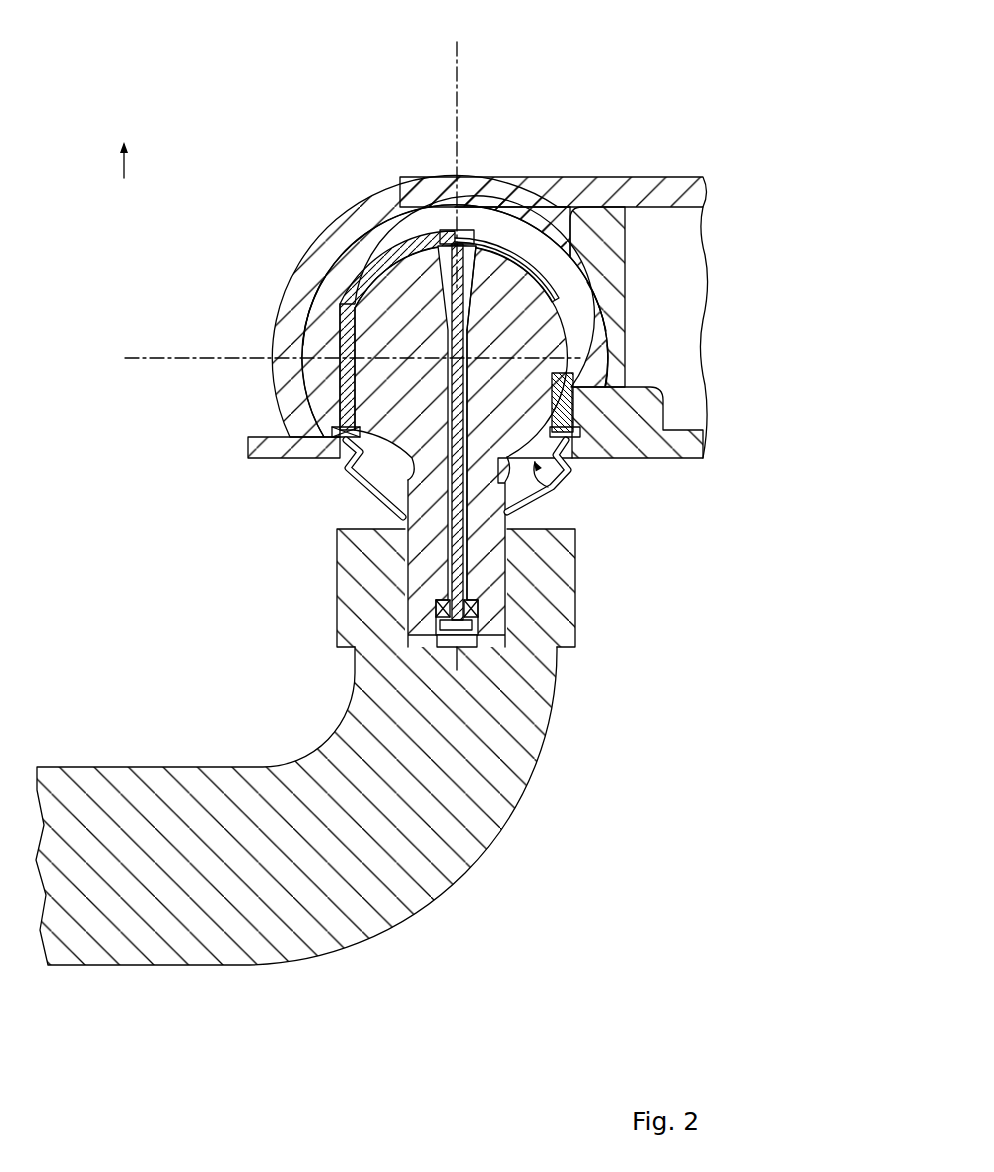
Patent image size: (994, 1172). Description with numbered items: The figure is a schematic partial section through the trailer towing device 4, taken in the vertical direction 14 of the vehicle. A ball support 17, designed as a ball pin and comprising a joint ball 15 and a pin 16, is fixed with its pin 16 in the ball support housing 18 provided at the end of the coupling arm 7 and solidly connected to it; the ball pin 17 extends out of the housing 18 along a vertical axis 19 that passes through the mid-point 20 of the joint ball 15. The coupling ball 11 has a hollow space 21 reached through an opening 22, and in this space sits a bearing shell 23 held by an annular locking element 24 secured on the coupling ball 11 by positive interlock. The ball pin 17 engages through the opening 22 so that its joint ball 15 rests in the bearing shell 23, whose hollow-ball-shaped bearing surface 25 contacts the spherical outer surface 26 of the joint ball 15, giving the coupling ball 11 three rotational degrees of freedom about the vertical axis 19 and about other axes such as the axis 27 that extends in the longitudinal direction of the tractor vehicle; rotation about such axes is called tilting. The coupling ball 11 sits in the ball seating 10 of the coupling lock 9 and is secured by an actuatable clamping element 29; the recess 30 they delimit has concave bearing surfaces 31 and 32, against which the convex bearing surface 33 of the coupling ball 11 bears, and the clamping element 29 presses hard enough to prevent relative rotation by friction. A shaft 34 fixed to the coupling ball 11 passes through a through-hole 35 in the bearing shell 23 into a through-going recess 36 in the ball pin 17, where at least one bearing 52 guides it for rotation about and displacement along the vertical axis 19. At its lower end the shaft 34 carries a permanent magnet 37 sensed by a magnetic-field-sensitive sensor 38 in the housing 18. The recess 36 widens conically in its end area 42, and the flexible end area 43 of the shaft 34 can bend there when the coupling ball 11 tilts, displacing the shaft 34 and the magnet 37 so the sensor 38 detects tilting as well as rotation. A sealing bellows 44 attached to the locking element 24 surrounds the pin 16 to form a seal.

The trailer towing device 4 is at (250, 70).
The coupling arm 7 is at (480, 857).
The coupling lock 9 is at (652, 177).
The ball seating 10 is at (330, 240).
The coupling ball 11 is at (330, 293).
The vertical direction 14 is at (121, 160).
The joint ball 15 is at (372, 380).
The pin 16 is at (497, 523).
The ball support 17 is at (398, 522).
The ball support housing 18 is at (567, 604).
The vertical axis 19 is at (460, 72).
The mid-point 20 is at (464, 358).
The hollow space 21 is at (348, 480).
The opening 22 is at (550, 487).
The bearing shell 23 is at (578, 428).
The annular locking element 24 is at (285, 432).
The bearing surface 25 is at (556, 375).
The spherical outer surface 26 is at (348, 462).
The axis 27 is at (175, 360).
The clamping element 29 is at (612, 243).
The recess 30 is at (553, 215).
The bearing surface 31 is at (318, 318).
The bearing surface 32 is at (597, 307).
The convex bearing surface 33 is at (608, 345).
The shaft 34 is at (456, 558).
The through-hole 35 is at (447, 252).
The through-going recess 36 is at (468, 554).
The permanent magnet 37 is at (450, 627).
The magnetic-field-sensitive sensor 38 is at (553, 652).
The end area 42 is at (435, 278).
The end area 43 is at (483, 263).
The sealing bellows 44 is at (562, 474).
The bearing 52 is at (447, 603).